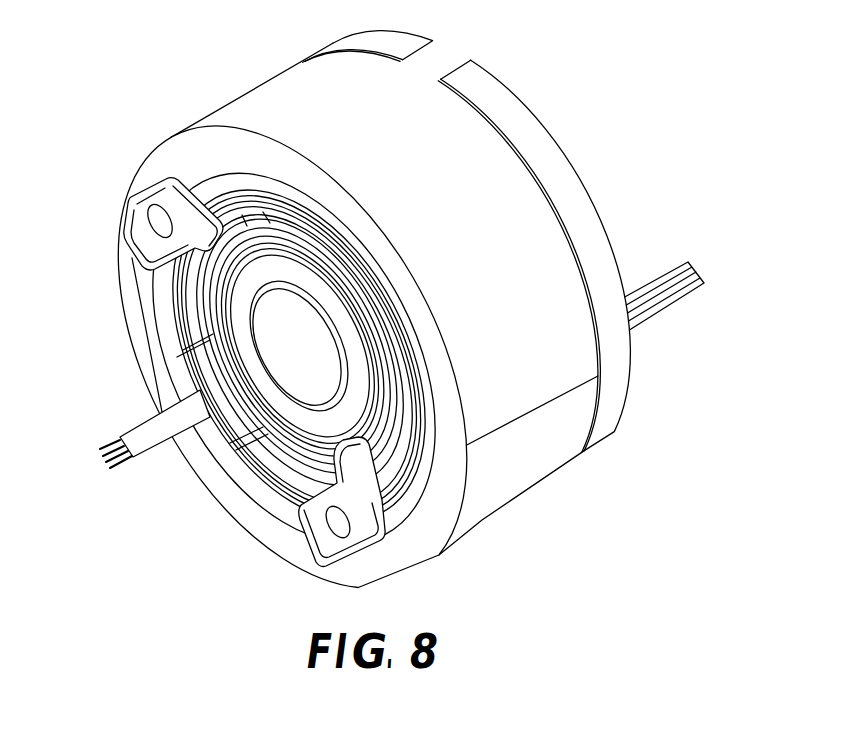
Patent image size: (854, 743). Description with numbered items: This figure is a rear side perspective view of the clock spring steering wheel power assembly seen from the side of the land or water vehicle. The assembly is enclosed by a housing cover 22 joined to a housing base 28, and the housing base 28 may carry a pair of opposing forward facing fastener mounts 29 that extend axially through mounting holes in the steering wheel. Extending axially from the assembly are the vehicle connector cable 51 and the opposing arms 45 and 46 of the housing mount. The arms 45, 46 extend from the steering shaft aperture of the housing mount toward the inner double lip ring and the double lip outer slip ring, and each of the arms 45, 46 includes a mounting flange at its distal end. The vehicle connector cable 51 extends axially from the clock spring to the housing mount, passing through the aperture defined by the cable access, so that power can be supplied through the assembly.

The housing cover 22 is at (530, 480).
The housing base 28 is at (592, 218).
The fastener mounts 29 is at (687, 262).
The arm 45 is at (135, 247).
The arm 46 is at (393, 540).
The vehicle connector cable 51 is at (143, 430).